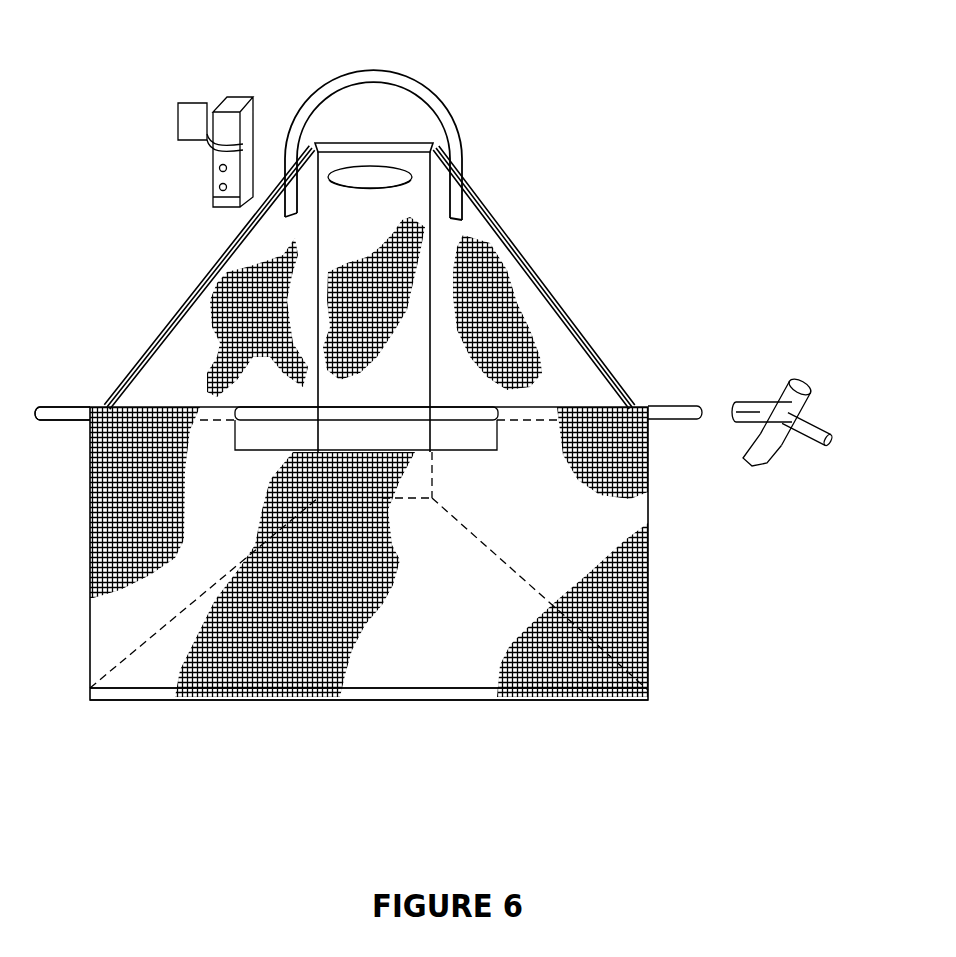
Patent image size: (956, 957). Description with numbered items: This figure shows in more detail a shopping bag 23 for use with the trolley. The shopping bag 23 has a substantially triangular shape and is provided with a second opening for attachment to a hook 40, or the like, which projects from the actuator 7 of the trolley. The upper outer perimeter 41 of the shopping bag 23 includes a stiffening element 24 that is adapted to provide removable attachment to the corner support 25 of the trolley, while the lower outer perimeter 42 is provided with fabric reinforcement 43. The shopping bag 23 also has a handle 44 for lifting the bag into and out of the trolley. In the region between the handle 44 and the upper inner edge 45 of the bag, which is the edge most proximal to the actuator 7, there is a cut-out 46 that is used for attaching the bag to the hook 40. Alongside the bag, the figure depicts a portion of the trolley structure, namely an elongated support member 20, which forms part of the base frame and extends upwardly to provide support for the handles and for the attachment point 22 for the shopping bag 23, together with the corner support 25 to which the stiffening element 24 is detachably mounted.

The shopping bag 23 is at (563, 220).
The upper inner edge 45 is at (358, 145).
The cut-out 46 is at (380, 177).
The handle 44 is at (462, 131).
The stiffening element 24 is at (460, 407).
The upper outer perimeter 41 is at (148, 410).
The lower outer perimeter 42 is at (140, 692).
The fabric reinforcement 43 is at (352, 665).
The hook 40 is at (193, 125).
The actuator 7 is at (230, 123).
The corner support 25 is at (753, 405).
The attachment point 22 is at (807, 383).
The elongated support member 20 is at (777, 438).